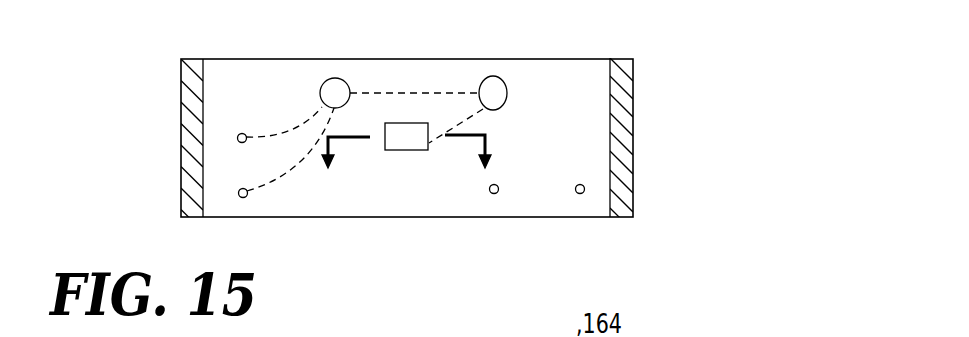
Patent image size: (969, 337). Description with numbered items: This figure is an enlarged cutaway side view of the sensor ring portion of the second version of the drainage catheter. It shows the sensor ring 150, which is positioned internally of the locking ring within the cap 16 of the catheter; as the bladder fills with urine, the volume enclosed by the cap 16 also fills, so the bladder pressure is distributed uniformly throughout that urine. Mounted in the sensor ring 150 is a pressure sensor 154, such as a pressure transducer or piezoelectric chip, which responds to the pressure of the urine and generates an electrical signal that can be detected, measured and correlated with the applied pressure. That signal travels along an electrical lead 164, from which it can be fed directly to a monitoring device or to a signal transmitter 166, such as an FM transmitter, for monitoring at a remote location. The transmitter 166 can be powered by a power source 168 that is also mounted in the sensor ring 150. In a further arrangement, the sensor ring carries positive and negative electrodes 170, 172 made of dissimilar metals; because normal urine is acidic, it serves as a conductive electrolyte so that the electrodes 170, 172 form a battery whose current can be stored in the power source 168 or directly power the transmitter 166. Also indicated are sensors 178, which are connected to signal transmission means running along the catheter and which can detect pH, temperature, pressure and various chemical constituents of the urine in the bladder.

The sensor ring 150 is at (633, 80).
The pressure sensor 154 is at (418, 123).
The electrical lead 164 is at (477, 117).
The signal transmitter 166 is at (500, 85).
The power source 168 is at (343, 80).
The positive electrode 170 is at (246, 198).
The negative electrode 172 is at (245, 133).
The sensors 178 is at (496, 193).
The cap 16 is at (406, 177).